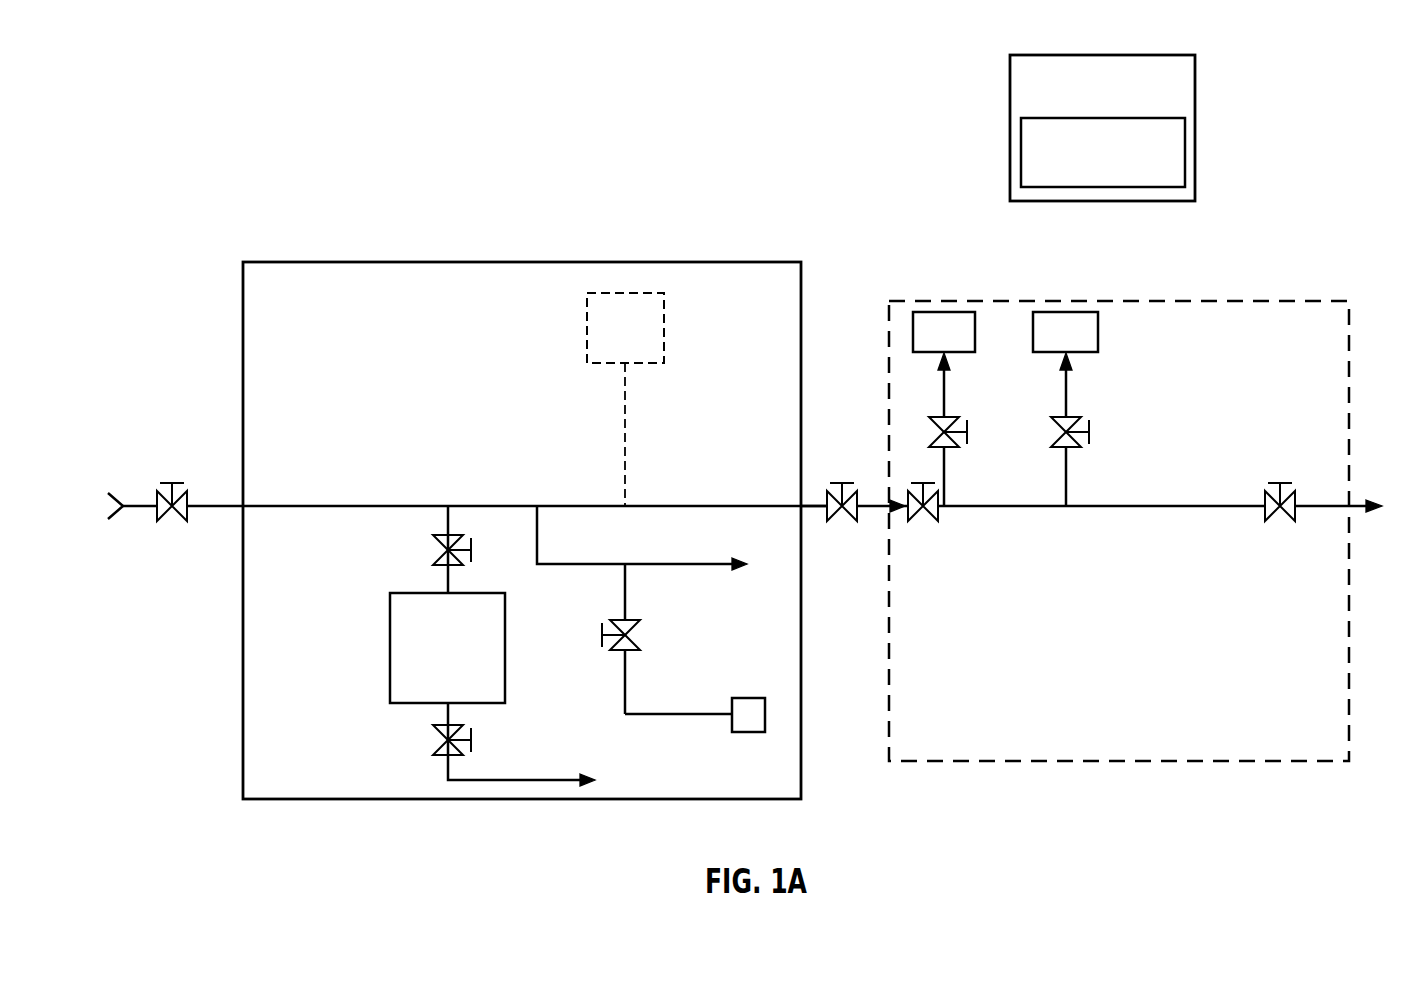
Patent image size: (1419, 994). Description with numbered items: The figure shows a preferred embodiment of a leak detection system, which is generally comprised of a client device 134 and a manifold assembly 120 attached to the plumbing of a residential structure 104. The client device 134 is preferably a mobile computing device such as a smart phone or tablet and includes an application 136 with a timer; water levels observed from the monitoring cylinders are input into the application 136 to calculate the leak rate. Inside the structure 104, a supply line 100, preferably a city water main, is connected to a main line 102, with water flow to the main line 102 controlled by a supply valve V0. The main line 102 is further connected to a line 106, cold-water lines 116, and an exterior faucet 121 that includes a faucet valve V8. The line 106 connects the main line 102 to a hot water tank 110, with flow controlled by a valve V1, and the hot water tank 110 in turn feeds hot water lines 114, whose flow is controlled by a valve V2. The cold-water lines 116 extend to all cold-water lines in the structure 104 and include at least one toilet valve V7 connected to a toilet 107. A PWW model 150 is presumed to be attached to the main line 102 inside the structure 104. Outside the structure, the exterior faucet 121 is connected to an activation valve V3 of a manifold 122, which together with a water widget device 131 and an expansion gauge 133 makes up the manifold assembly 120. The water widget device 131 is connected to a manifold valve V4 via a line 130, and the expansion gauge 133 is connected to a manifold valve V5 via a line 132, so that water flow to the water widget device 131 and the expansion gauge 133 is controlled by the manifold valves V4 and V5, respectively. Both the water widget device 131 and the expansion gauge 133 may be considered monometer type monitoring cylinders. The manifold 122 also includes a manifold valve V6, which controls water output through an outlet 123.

The supply line 100 is at (112, 516).
The main line 102 is at (292, 506).
The residential structure 104 is at (298, 262).
The line 106 is at (446, 520).
The toilet 107 is at (732, 705).
The hot water tank 110 is at (505, 618).
The hot water lines 114 is at (530, 780).
The cold-water lines 116 is at (537, 528).
The manifold assembly 120 is at (1325, 300).
The exterior faucet 121 is at (813, 500).
The manifold 122 is at (1192, 506).
The outlet 123 is at (1357, 510).
The line 130 is at (946, 390).
The water widget device 131 is at (935, 312).
The line 132 is at (1068, 406).
The expansion gauge 133 is at (1098, 320).
The client device 134 is at (1197, 83).
The application 136 is at (1187, 150).
The PWW model 150 is at (665, 320).
The supply valve V0 is at (174, 517).
The valve V1 is at (434, 550).
The valve V2 is at (434, 741).
The activation valve V3 is at (924, 517).
The manifold valve V4 is at (932, 434).
The manifold valve V5 is at (1053, 434).
The manifold valve V6 is at (1300, 496).
The toilet valve V7 is at (637, 635).
The faucet valve V8 is at (842, 517).